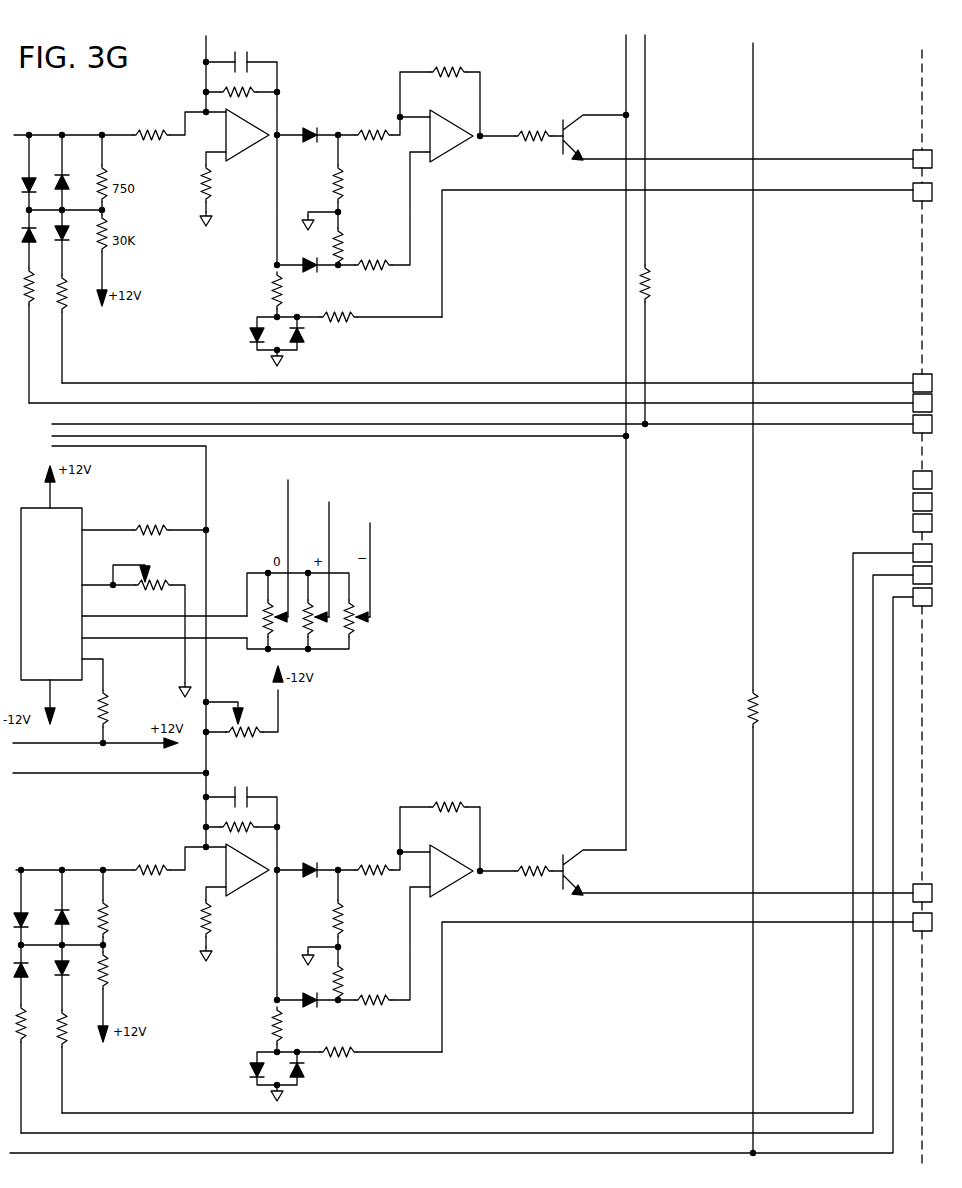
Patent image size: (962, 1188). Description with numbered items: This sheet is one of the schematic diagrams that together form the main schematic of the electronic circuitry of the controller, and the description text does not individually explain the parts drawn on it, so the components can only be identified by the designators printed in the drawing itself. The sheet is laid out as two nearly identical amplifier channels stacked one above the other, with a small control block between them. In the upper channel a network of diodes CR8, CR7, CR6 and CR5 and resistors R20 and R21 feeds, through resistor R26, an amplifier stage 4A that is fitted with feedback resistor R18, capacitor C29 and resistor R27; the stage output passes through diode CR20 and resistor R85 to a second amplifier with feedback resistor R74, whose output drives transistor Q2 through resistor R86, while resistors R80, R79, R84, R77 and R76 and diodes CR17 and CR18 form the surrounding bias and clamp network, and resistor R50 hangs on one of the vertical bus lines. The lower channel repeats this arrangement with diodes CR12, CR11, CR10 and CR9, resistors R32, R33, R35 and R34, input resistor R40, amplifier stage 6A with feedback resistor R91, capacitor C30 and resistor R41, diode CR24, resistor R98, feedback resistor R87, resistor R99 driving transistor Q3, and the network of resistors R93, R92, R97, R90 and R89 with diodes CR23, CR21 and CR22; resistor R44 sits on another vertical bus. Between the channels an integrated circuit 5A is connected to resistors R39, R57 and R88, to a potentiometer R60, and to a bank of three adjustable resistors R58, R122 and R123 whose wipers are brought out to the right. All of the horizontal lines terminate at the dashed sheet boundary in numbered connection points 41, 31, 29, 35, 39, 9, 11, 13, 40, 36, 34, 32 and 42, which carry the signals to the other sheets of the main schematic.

The resistor 20K R26 is at (151, 136).
The resistor 200K R18 is at (240, 92).
The capacitor C29 is at (229, 56).
The resistor 5.1K R27 is at (220, 185).
The operational amplifier 4A is at (349, 135).
The diode CR20 is at (309, 128).
The resistor 10K R85 is at (373, 136).
The resistor 1M R74 is at (443, 64).
The resistor 4.7K R86 is at (532, 136).
The transistor Q2 is at (594, 137).
The resistor 7.5K R80 is at (353, 184).
The resistor 7.5K R79 is at (353, 245).
The resistor 10K R84 is at (378, 274).
The resistor 62K R77 is at (289, 290).
The resistor 5.1K R76 is at (338, 316).
The diode CR17 is at (243, 333).
The diode CR18 is at (311, 339).
The diode CR8 is at (32, 170).
The diode CR7 is at (36, 245).
The diode CR6 is at (72, 177).
The diode CR5 is at (72, 228).
The resistor 5.1K R20 is at (76, 293).
The resistor 5.1K R21 is at (34, 305).
The resistor 5.1K R50 is at (661, 283).
The resistor 5.1K R44 is at (770, 708).
The integrated circuit 5A is at (51, 594).
The resistor 10K R39 is at (152, 533).
The potentiometer 2K R57 is at (155, 587).
The resistor 620K R88 is at (85, 708).
The potentiometer 50K R60 is at (242, 732).
The potentiometer 2K R58 is at (278, 625).
The potentiometer 2K R122 is at (323, 625).
The potentiometer 2K R123 is at (367, 627).
The capacitor C30 is at (239, 791).
The resistor 200K R91 is at (245, 827).
The resistor 20K R40 is at (151, 870).
The operational amplifier 6A is at (349, 870).
The resistor 5.1K R41 is at (220, 920).
The diode CR24 is at (309, 863).
The resistor 10K R98 is at (373, 871).
The resistor 1M R87 is at (443, 799).
The resistor 4.7K R99 is at (532, 871).
The transistor Q3 is at (594, 872).
The resistor 7.5K R93 is at (353, 919).
The resistor 7.5K R92 is at (353, 980).
The diode CR23 is at (306, 992).
The resistor 10K R97 is at (378, 1009).
The resistor 62K R90 is at (289, 1025).
The resistor 5.1K R89 is at (338, 1051).
The diode CR21 is at (242, 1066).
The diode CR22 is at (311, 1073).
The diode CR12 is at (34, 913).
The diode CR11 is at (35, 964).
The diode CR10 is at (76, 911).
The diode CR9 is at (72, 963).
The resistor 750 R32 is at (118, 922).
The resistor 30K R33 is at (118, 973).
The resistor 5.1K R35 is at (36, 1021).
The resistor 5.1K R34 is at (78, 1028).
The terminal 41 is at (757, 159).
The terminal 31 is at (687, 250).
The terminal 29 is at (497, 383).
The terminal 35 is at (480, 403).
The terminal 39 is at (922, 424).
The terminal 9 is at (922, 480).
The terminal 11 is at (922, 502).
The terminal 13 is at (922, 523).
The terminal 40 is at (497, 828).
The terminal 36 is at (476, 849).
The terminal 34 is at (471, 870).
The terminal 32 is at (757, 893).
The terminal 42 is at (687, 982).